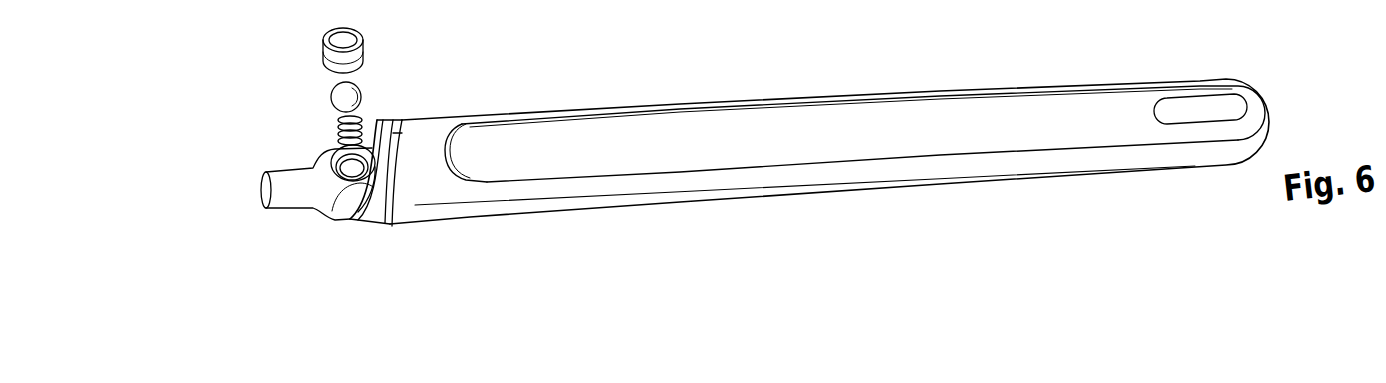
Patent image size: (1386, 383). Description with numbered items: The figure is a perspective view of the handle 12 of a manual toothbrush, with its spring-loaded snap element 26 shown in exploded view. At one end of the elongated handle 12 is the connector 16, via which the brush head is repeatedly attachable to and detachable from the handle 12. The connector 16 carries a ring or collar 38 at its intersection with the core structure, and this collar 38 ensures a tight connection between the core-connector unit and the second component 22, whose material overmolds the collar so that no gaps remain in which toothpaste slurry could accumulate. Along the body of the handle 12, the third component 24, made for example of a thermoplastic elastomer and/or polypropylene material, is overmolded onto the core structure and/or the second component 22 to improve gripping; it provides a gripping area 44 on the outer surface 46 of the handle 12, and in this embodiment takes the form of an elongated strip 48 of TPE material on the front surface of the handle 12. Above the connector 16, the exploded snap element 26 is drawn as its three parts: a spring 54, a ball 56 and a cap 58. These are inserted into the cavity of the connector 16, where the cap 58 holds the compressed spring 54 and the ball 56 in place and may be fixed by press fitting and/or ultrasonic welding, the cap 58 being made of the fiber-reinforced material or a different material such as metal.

The handle 12 is at (733, 152).
The connector 16 is at (298, 193).
The second component 22 is at (442, 188).
The third component 24 is at (588, 150).
The spring-loaded snap element 26 is at (356, 91).
The ring/collar 38 is at (378, 212).
The gripping area 44 is at (727, 128).
The outer surface 46 is at (1057, 120).
The elongated strip 48 is at (950, 125).
The spring 54 is at (337, 143).
The ball 56 is at (343, 98).
The cap 58 is at (323, 63).